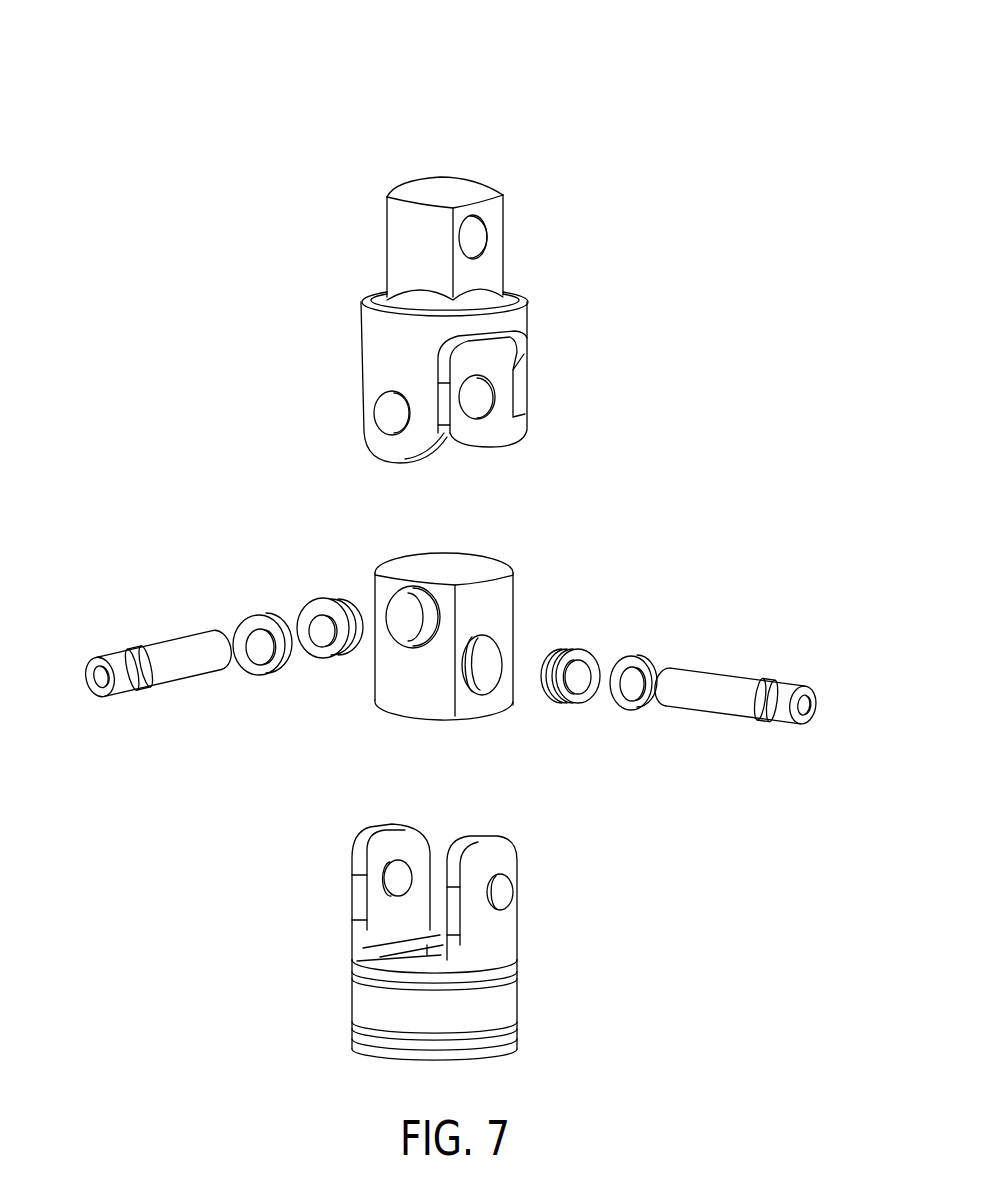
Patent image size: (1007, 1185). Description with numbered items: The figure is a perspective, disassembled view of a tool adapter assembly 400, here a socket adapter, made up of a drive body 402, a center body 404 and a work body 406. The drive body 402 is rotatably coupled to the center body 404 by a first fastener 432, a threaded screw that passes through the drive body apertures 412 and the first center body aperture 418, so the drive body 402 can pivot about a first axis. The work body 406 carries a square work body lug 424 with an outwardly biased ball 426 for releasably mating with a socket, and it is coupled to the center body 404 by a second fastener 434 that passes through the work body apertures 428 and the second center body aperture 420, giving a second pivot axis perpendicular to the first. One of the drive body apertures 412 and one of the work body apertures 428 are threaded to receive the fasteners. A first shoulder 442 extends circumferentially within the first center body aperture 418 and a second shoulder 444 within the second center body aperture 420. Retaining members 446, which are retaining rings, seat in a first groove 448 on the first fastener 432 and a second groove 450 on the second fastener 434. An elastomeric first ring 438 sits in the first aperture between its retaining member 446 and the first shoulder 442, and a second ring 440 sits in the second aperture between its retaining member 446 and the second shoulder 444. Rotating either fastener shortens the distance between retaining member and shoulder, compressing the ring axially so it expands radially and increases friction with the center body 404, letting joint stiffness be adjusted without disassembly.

The tool adapter assembly 400 is at (185, 90).
The drive body 402 is at (538, 1014).
The center body 404 is at (536, 592).
The work body 406 is at (540, 320).
The drive body apertures 412 is at (507, 900).
The first center body aperture 418 is at (477, 694).
The second center body aperture 420 is at (405, 590).
The work body lug 424 is at (495, 204).
The outwardly biased ball 426 is at (474, 242).
The work body apertures 428 is at (381, 404).
The first fastener 432 is at (806, 712).
The second fastener 434 is at (98, 673).
The first ring 438 is at (559, 702).
The second ring 440 is at (324, 658).
The first shoulder 442 is at (470, 648).
The second shoulder 444 is at (413, 643).
The retaining members 446 is at (250, 668).
The first groove 448 is at (765, 715).
The second groove 450 is at (142, 681).